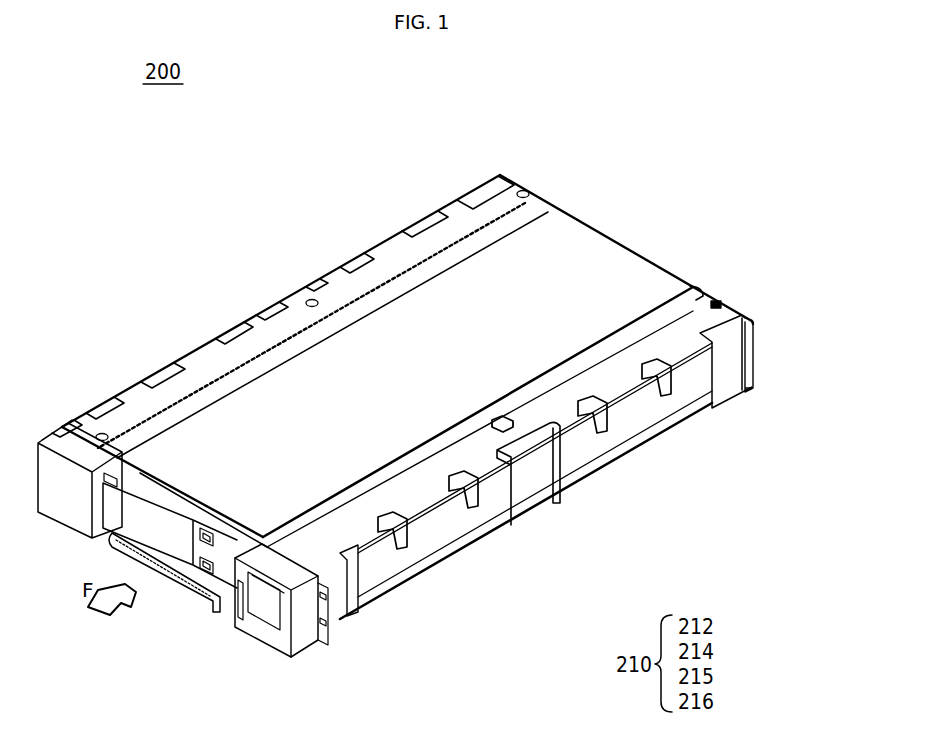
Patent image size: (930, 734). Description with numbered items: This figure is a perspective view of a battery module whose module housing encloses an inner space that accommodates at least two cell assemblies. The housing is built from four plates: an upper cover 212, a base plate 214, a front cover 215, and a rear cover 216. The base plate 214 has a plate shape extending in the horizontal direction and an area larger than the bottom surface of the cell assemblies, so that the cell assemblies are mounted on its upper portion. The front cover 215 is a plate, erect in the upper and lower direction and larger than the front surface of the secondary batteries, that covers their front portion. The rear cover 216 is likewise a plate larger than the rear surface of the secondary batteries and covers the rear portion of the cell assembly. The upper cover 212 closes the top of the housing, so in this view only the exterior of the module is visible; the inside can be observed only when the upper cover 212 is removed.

The upper cover 212 is at (530, 278).
The base plate 214 is at (497, 538).
The front cover 215 is at (326, 643).
The rear cover 216 is at (756, 352).